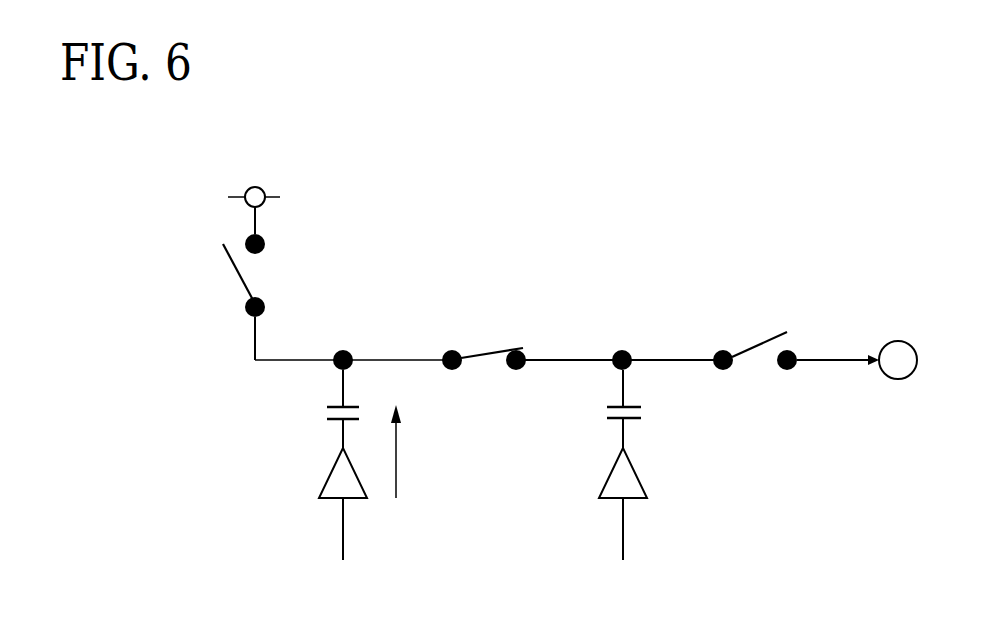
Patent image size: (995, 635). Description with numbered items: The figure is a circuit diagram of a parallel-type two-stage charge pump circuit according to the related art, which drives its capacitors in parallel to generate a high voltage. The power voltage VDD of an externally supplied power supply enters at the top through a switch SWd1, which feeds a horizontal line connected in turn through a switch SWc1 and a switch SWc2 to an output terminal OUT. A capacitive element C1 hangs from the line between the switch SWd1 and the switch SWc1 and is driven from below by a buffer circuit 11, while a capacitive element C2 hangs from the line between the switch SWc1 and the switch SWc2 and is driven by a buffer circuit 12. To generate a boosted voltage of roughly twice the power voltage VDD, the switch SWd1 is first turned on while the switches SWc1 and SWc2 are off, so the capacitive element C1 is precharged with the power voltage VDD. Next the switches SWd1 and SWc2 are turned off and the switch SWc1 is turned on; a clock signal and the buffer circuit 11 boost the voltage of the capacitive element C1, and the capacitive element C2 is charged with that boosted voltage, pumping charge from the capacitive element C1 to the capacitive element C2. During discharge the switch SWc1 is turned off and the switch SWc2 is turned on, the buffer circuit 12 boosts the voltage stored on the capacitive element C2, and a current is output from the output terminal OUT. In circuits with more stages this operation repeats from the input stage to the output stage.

The buffer circuit 11 is at (338, 478).
The buffer circuit 12 is at (618, 478).
The capacitive element C1 is at (322, 410).
The capacitive element C2 is at (603, 410).
The switch SWd1 is at (236, 278).
The switch SWc1 is at (482, 342).
The switch SWc2 is at (757, 340).
The power voltage VDD is at (254, 193).
The output terminal OUT is at (857, 343).